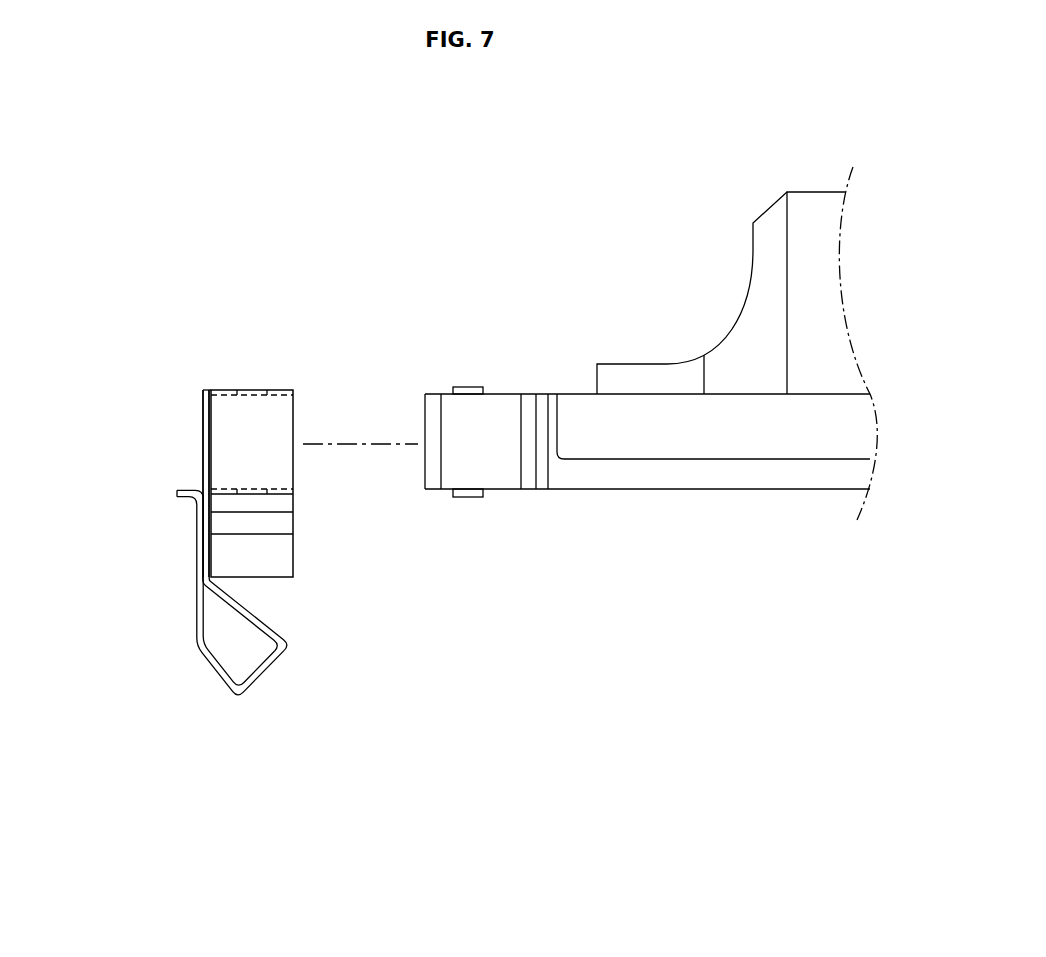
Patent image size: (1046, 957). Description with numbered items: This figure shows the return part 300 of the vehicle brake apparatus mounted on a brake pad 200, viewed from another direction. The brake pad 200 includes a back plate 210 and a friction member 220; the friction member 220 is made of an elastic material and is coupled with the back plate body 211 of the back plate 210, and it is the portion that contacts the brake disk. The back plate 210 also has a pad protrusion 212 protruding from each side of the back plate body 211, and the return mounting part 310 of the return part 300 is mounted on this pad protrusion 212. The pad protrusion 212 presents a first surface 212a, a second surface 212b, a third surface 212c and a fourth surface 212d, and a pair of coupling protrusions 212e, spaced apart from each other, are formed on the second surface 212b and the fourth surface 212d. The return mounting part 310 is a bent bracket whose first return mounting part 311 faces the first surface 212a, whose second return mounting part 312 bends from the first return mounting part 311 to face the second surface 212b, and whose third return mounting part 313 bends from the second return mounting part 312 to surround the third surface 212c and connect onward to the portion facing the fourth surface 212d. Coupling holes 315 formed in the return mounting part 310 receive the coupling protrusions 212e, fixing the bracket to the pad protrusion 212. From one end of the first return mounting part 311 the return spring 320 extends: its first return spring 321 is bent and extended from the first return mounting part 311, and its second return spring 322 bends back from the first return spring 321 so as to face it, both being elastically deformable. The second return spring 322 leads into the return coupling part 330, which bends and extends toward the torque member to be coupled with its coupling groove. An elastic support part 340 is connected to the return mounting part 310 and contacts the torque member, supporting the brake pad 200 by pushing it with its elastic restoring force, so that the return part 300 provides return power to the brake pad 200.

The brake pad 200 is at (778, 272).
The back plate 210 is at (624, 436).
The back plate body 211 is at (675, 475).
The pad protrusion 212 is at (510, 473).
The first surface 212a is at (423, 457).
The second surface 212b is at (446, 394).
The third surface 212c is at (505, 430).
The fourth surface 212d is at (502, 489).
The coupling protrusion 212e is at (468, 489).
The friction member 220 is at (812, 360).
The return part 300 is at (175, 717).
The return mounting part 310 is at (163, 468).
The first return mounting part 311 is at (203, 390).
The second return mounting part 312 is at (227, 390).
The third return mounting part 313 is at (225, 438).
The coupling hole 315 is at (265, 489).
The return spring 320 is at (224, 708).
The first return spring 321 is at (280, 652).
The second return spring 322 is at (197, 650).
The return coupling part 330 is at (187, 497).
The elastic support part 340 is at (283, 560).